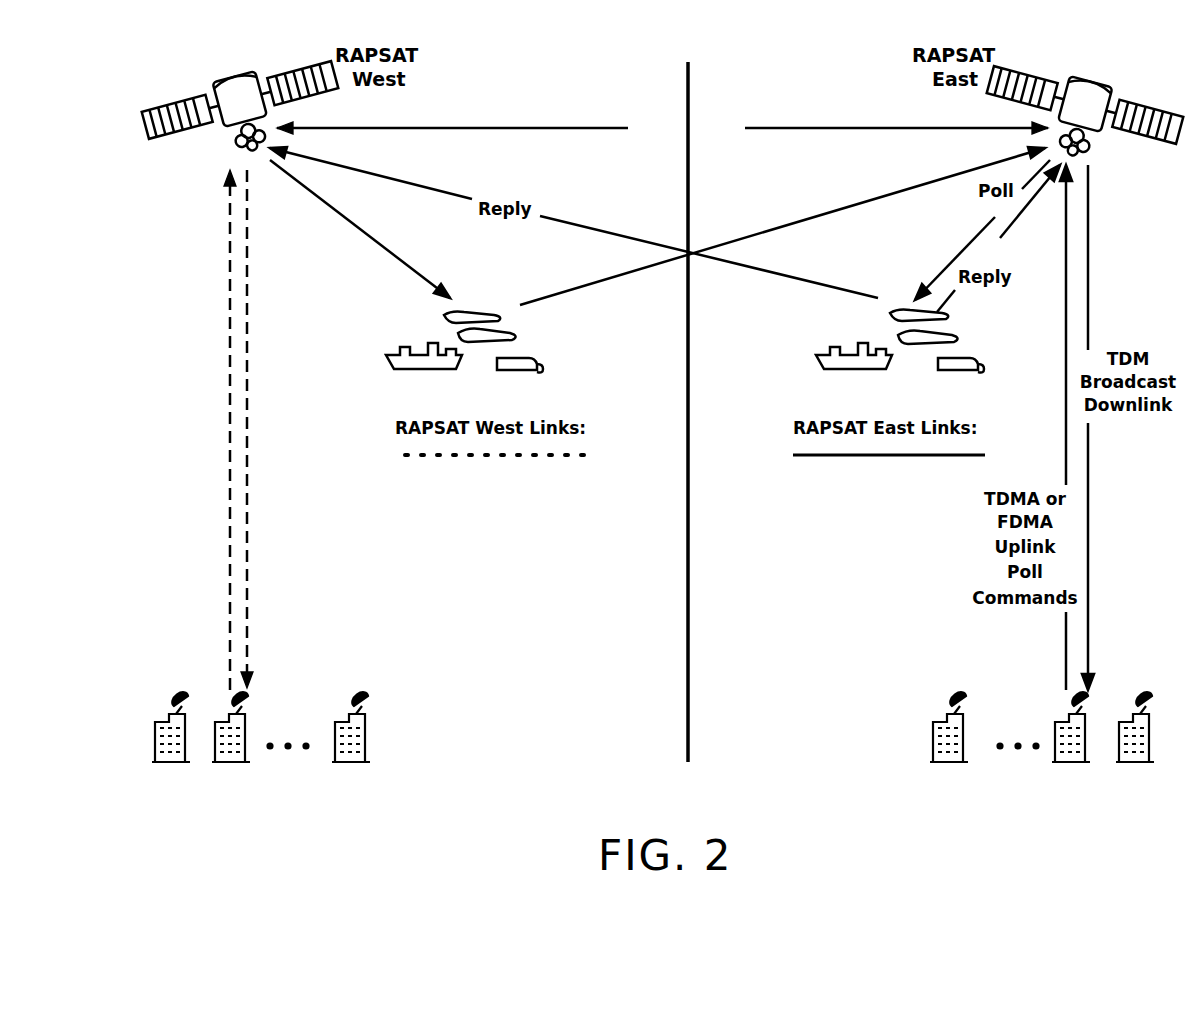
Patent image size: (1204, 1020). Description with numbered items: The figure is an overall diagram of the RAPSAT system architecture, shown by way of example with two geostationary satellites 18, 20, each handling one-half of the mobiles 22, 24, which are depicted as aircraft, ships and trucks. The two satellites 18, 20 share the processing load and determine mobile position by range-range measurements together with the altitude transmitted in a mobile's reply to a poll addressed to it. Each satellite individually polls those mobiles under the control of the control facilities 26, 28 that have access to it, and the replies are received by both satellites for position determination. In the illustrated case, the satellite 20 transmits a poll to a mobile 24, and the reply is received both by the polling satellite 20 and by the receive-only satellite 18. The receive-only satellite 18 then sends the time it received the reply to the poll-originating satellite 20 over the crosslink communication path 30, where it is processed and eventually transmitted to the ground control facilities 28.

The geostationary satellite 18 is at (246, 78).
The geostationary satellite 20 is at (1100, 92).
The mobiles 22 is at (525, 333).
The mobiles 24 is at (835, 330).
The control facilities 26 is at (345, 672).
The control facilities 28 is at (978, 676).
The crosslink communication path 30 is at (497, 128).